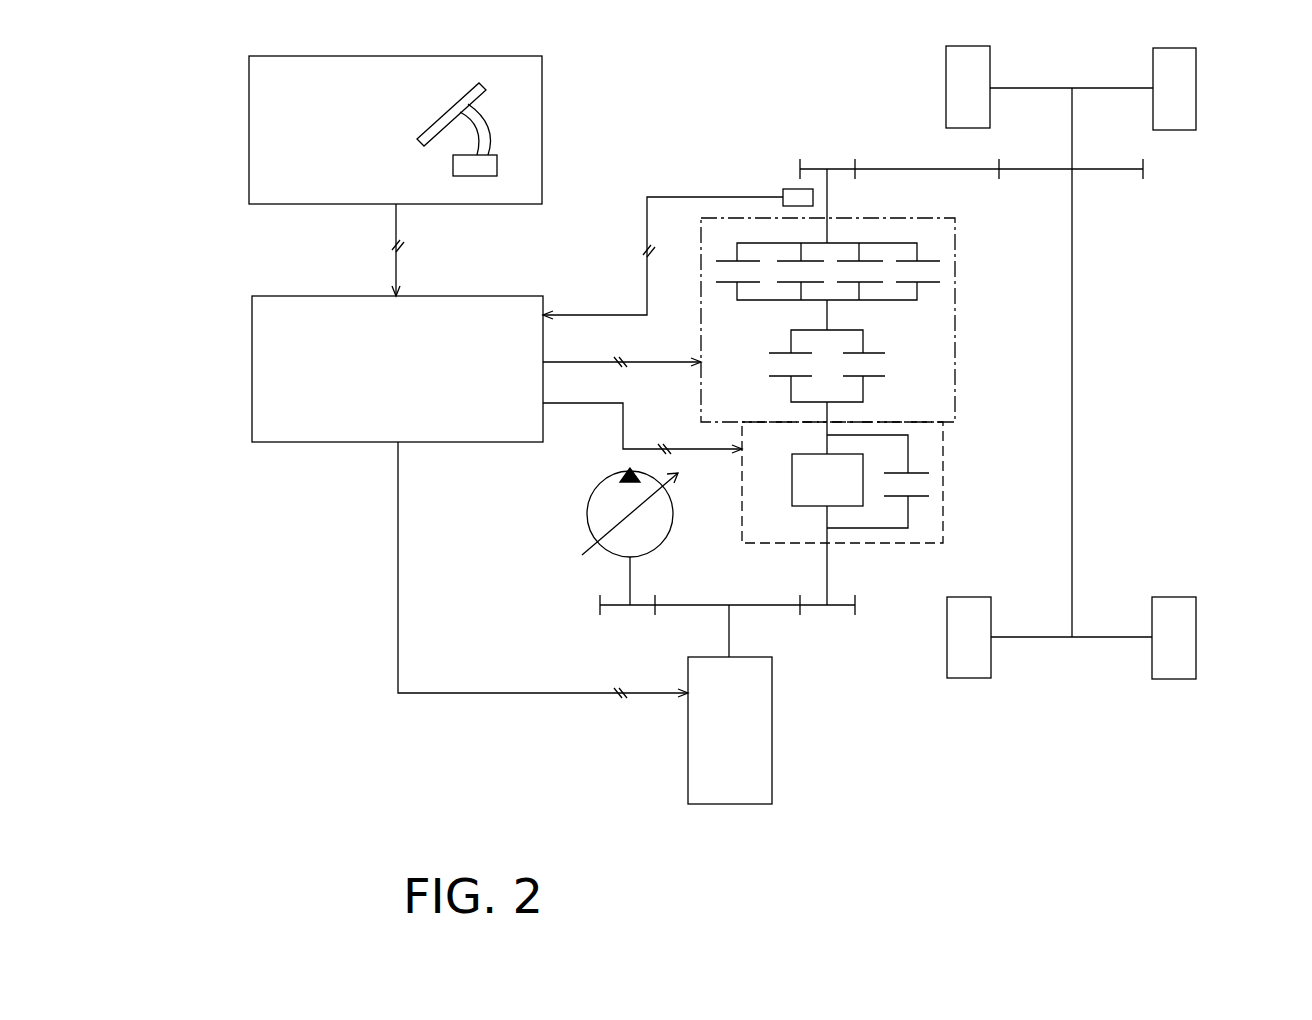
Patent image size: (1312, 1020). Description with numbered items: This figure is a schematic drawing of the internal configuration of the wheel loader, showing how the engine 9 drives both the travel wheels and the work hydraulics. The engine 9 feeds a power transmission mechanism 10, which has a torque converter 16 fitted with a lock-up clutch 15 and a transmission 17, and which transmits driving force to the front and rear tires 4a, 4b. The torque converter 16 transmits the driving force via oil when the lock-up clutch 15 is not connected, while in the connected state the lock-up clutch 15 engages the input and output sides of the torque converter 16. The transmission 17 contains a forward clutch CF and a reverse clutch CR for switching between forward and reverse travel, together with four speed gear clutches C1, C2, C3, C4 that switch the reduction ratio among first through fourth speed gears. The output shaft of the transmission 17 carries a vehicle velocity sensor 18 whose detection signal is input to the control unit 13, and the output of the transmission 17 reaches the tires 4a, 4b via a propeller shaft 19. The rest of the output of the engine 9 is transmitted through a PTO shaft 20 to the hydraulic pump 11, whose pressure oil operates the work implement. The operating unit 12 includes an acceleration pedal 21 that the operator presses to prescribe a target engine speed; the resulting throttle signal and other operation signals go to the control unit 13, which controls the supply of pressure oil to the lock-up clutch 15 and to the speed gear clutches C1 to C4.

The tire 4a is at (946, 88).
The tire 4b is at (972, 678).
The engine 9 is at (772, 726).
The power transmission mechanism 10 is at (745, 168).
The hydraulic pump 11 is at (590, 528).
The operating unit 12 is at (249, 139).
The control unit 13 is at (252, 366).
The lock-up clutch 15 is at (922, 508).
The torque converter 16 is at (893, 543).
The transmission 17 is at (866, 320).
The vehicle velocity sensor 18 is at (793, 189).
The propeller shaft 19 is at (1072, 397).
The PTO shaft 20 is at (851, 633).
The acceleration pedal 21 is at (487, 130).
The speed gear clutch C1 is at (921, 283).
The speed gear clutch C2 is at (880, 283).
The speed gear clutch C3 is at (778, 283).
The speed gear clutch C4 is at (730, 283).
The reverse clutch CR is at (782, 377).
The forward clutch CF is at (876, 377).